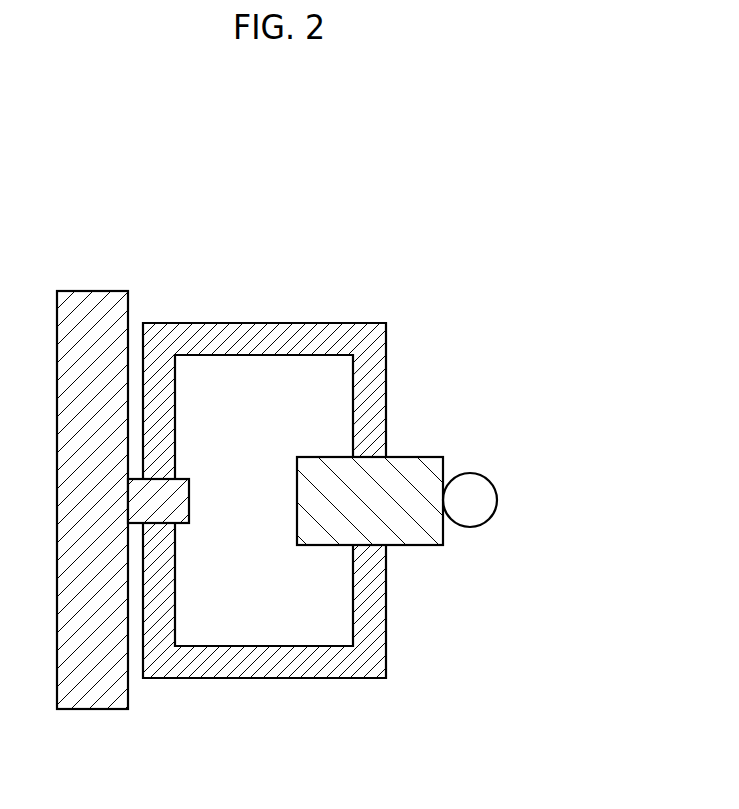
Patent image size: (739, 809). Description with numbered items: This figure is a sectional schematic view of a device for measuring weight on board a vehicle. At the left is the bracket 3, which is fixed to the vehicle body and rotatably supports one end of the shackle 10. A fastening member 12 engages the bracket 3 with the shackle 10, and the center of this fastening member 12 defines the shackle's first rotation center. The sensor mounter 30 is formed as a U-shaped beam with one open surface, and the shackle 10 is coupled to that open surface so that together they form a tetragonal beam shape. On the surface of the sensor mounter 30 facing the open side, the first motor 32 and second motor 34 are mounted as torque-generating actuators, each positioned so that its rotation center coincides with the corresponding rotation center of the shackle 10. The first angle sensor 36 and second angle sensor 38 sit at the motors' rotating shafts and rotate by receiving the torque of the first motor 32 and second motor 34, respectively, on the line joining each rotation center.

The bracket 3 is at (89, 290).
The shackle 10 is at (162, 640).
The fastening member 12 is at (187, 478).
The sensor mounter 30 is at (318, 340).
The first motor 32 is at (370, 455).
The second motor 34 is at (417, 470).
The first angle sensor 36 is at (489, 463).
The second angle sensor 38 is at (474, 482).